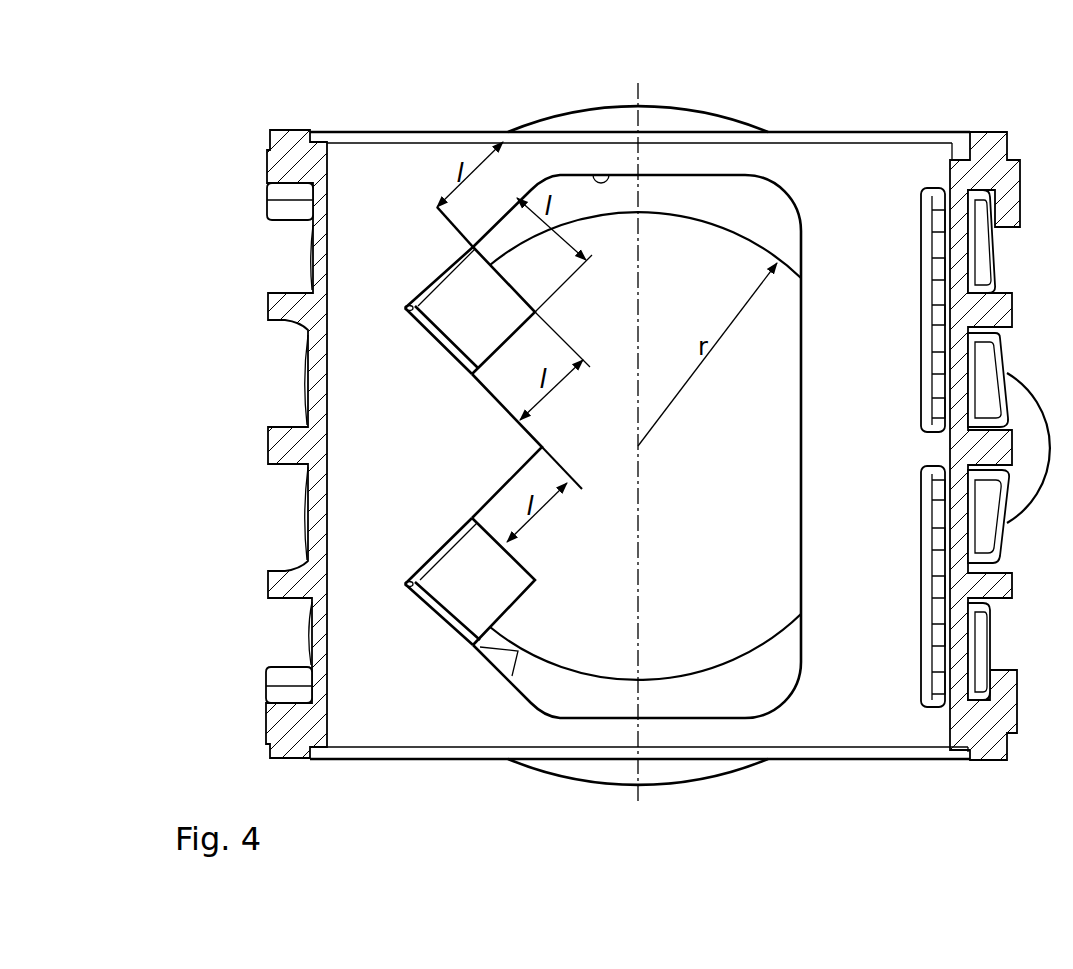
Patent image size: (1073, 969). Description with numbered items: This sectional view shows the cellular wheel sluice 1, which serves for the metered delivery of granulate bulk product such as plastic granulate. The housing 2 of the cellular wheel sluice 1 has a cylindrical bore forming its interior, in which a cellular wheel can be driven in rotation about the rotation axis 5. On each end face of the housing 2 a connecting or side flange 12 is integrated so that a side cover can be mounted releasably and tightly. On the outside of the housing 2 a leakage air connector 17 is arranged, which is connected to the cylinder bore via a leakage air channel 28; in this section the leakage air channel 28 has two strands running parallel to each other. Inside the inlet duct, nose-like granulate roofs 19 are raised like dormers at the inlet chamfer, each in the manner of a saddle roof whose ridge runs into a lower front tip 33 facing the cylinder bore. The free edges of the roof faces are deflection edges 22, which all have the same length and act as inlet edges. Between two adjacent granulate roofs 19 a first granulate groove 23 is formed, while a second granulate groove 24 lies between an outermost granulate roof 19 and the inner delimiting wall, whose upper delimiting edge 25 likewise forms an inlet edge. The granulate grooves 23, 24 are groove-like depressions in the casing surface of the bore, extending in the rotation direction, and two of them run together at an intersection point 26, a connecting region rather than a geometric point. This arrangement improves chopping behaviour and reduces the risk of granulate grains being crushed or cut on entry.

The cellular wheel sluice 1 is at (776, 110).
The housing 2 is at (988, 146).
The rotation axis 5 is at (638, 735).
The connecting flange 12 is at (856, 132).
The leakage air connector 17 is at (1040, 520).
The granulate roof 19 is at (460, 352).
The deflection edge 22 is at (473, 247).
The first granulate groove 23 is at (478, 382).
The second granulate groove 24 is at (405, 308).
The delimiting edge 25 is at (592, 176).
The intersection point 26 is at (517, 312).
The leakage air channel 28 is at (927, 700).
The front tip 33 is at (540, 632).